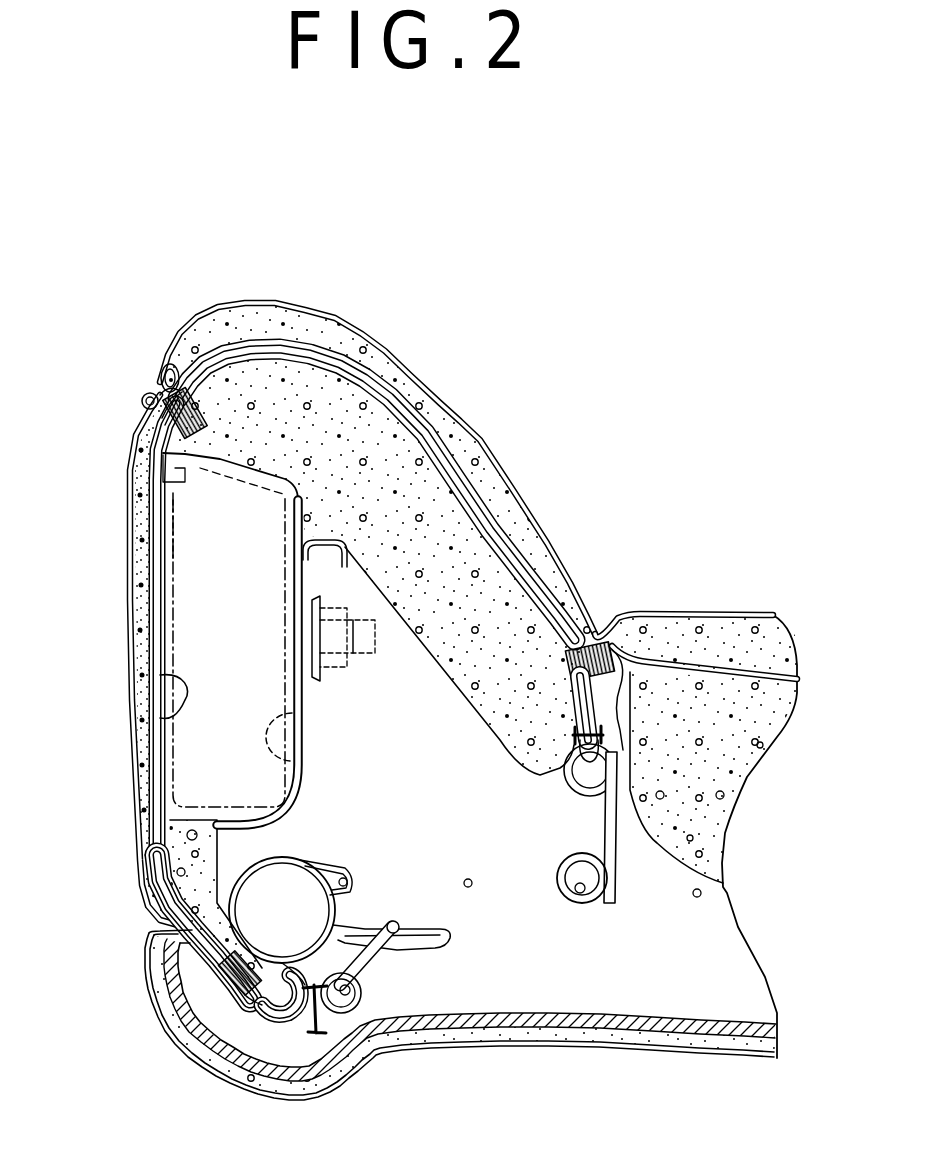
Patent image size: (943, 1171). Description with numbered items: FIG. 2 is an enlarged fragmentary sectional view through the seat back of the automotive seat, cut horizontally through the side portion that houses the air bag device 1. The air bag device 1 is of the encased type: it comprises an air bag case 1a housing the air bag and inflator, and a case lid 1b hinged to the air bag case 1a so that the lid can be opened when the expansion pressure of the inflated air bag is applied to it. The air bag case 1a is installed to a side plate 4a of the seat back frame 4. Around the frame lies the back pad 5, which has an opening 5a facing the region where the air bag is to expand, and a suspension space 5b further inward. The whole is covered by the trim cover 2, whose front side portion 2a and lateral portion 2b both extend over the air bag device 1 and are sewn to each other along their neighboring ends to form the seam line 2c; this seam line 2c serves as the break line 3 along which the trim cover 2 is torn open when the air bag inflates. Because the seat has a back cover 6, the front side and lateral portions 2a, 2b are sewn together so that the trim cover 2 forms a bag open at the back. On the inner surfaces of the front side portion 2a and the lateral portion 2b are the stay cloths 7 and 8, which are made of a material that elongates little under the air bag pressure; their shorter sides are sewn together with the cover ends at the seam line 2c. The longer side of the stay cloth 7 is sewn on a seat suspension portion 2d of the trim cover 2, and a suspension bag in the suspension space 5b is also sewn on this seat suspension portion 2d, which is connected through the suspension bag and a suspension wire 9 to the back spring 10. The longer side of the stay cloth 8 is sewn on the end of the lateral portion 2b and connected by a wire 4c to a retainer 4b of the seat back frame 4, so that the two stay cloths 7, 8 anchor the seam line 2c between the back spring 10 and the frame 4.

The air bag device 1 is at (195, 613).
The air bag case 1a is at (290, 713).
The case lid 1b is at (163, 523).
The trim cover 2 is at (666, 588).
The front side portion 2a is at (486, 442).
The lateral portion 2b is at (136, 836).
The seam line 2c is at (172, 372).
The seat suspension portion 2d is at (598, 622).
The break line 3 is at (130, 405).
The seat back frame 4 is at (322, 858).
The side plate 4a is at (307, 750).
The retainer 4b is at (362, 932).
The wire 4c is at (362, 967).
The back pad 5 is at (762, 776).
The opening 5a is at (193, 820).
The suspension space 5b is at (640, 662).
The back cover 6 is at (542, 1037).
The stay cloth 7 is at (383, 417).
The stay cloth 8 is at (162, 677).
The suspension wire 9 is at (617, 852).
The back spring 10 is at (578, 891).